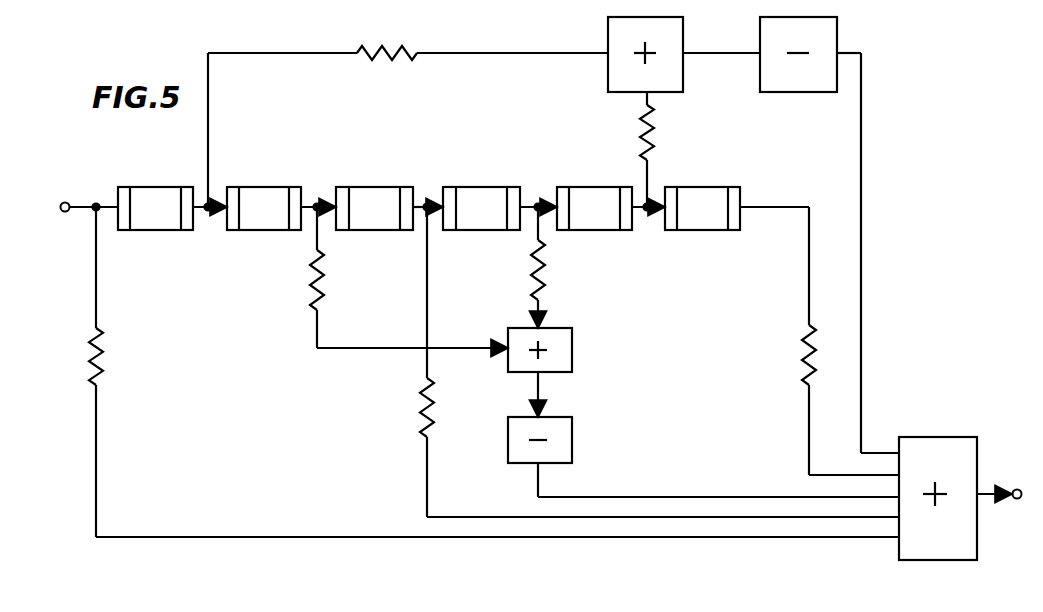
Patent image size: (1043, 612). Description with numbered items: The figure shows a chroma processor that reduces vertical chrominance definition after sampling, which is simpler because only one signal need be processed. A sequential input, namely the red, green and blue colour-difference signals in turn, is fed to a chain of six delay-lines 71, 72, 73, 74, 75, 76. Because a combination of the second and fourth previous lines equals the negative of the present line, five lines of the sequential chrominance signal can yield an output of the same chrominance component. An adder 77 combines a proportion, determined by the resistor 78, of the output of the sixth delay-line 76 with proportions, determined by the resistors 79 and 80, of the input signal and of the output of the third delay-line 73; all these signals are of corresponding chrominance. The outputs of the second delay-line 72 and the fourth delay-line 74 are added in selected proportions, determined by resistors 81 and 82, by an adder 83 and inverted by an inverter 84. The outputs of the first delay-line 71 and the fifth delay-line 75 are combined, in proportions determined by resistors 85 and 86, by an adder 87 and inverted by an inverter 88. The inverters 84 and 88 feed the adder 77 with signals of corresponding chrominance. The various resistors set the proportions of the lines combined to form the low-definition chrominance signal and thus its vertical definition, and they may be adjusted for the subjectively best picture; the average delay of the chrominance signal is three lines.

The delay-line 71 is at (161, 190).
The delay-line 72 is at (268, 190).
The delay-line 73 is at (375, 190).
The delay-line 74 is at (482, 190).
The delay-line 75 is at (588, 190).
The delay-line 76 is at (707, 190).
The adder 77 is at (928, 438).
The resistor 78 is at (802, 352).
The resistor 79 is at (106, 342).
The resistor 80 is at (418, 400).
The resistor 81 is at (312, 280).
The resistor 82 is at (544, 271).
The adder 83 is at (574, 355).
The inverter 84 is at (570, 424).
The resistor 85 is at (406, 52).
The resistor 86 is at (654, 131).
The adder 87 is at (681, 34).
The inverter 88 is at (836, 34).